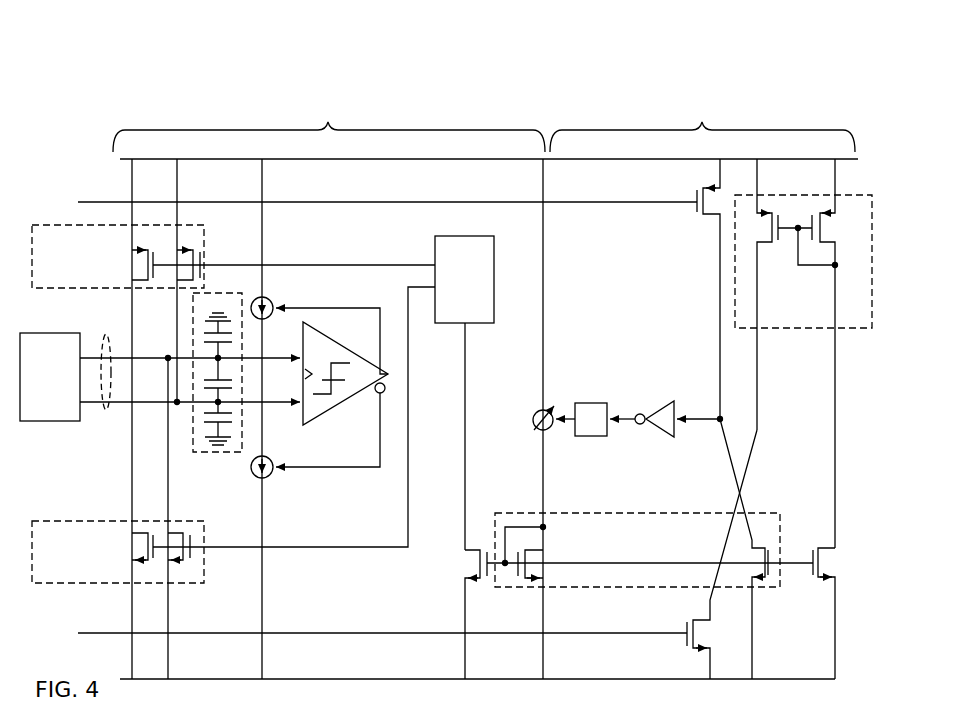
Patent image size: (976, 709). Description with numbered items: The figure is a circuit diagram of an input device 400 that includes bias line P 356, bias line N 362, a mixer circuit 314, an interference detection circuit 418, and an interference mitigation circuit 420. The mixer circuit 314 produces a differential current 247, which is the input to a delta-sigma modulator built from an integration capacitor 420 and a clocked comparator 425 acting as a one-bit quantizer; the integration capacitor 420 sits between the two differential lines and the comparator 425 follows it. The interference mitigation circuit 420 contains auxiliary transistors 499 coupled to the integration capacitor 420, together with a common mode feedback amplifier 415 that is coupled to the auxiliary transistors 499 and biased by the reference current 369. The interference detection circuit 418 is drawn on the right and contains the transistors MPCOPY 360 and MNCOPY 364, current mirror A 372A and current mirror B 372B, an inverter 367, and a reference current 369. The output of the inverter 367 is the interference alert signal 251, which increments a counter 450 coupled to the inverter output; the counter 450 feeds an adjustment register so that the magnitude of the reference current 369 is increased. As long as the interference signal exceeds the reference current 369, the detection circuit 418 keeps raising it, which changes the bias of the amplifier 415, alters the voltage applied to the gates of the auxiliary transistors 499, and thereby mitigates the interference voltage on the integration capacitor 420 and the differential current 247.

The input device 400 is at (148, 109).
The interference mitigation circuit 420 is at (186, 478).
The interference detection circuit 418 is at (702, 109).
The bias line P 356 is at (123, 200).
The bias line N 362 is at (118, 630).
The auxiliary transistors 499 is at (233, 404).
The mixer circuit 314 is at (50, 377).
The differential current 247 is at (108, 416).
The clocked comparator 425 is at (296, 418).
The common mode feedback (CMFB) amplifier 415 is at (464, 393).
The MPCOPY 360 is at (698, 216).
The current mirror A 372A is at (803, 353).
The interference alert signal 251 is at (622, 410).
The counter 450 is at (610, 438).
The inverter 367 is at (683, 440).
The reference current 369 is at (527, 426).
The current mirror B 372B is at (650, 549).
The MNCOPY 364 is at (688, 652).